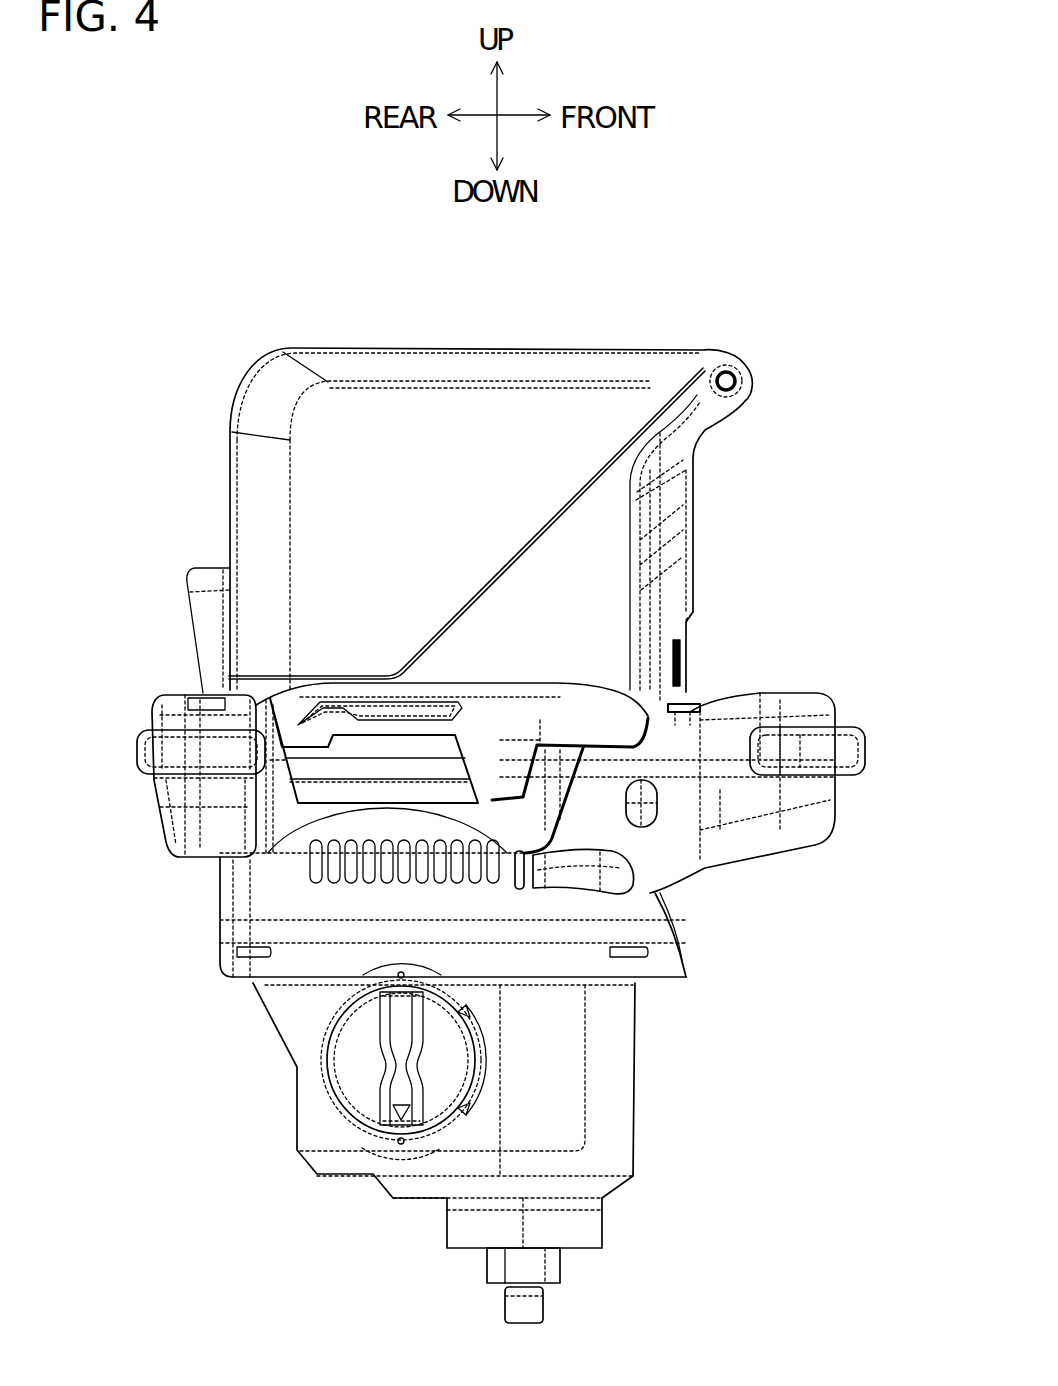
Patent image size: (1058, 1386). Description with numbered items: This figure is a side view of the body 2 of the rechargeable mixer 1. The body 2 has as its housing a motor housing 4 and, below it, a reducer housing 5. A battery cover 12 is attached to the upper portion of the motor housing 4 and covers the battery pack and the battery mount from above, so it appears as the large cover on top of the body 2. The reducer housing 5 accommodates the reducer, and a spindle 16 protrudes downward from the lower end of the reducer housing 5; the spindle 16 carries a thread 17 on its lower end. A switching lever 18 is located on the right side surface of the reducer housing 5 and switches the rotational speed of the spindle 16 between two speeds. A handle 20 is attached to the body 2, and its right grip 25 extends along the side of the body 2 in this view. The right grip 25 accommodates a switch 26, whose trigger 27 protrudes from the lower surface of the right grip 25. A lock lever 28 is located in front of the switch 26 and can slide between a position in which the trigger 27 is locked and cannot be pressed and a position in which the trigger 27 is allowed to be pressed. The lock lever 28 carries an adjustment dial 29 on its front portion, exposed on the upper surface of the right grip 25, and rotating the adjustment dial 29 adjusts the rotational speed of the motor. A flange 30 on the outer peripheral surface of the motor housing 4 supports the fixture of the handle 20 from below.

The mixer 1 is at (623, 277).
The body 2 is at (707, 500).
The motor housing 4 is at (604, 593).
The reducer housing 5 is at (612, 1089).
The battery cover 12 is at (433, 437).
The spindle 16 is at (533, 1266).
The thread 17 is at (530, 1304).
The switching lever 18 is at (400, 1078).
The handle 20 is at (856, 722).
The right grip 25 is at (438, 690).
The switch 26 is at (528, 712).
The trigger 27 is at (590, 870).
The lock lever 28 is at (680, 922).
The adjustment dial 29 is at (690, 706).
The flange 30 is at (385, 815).